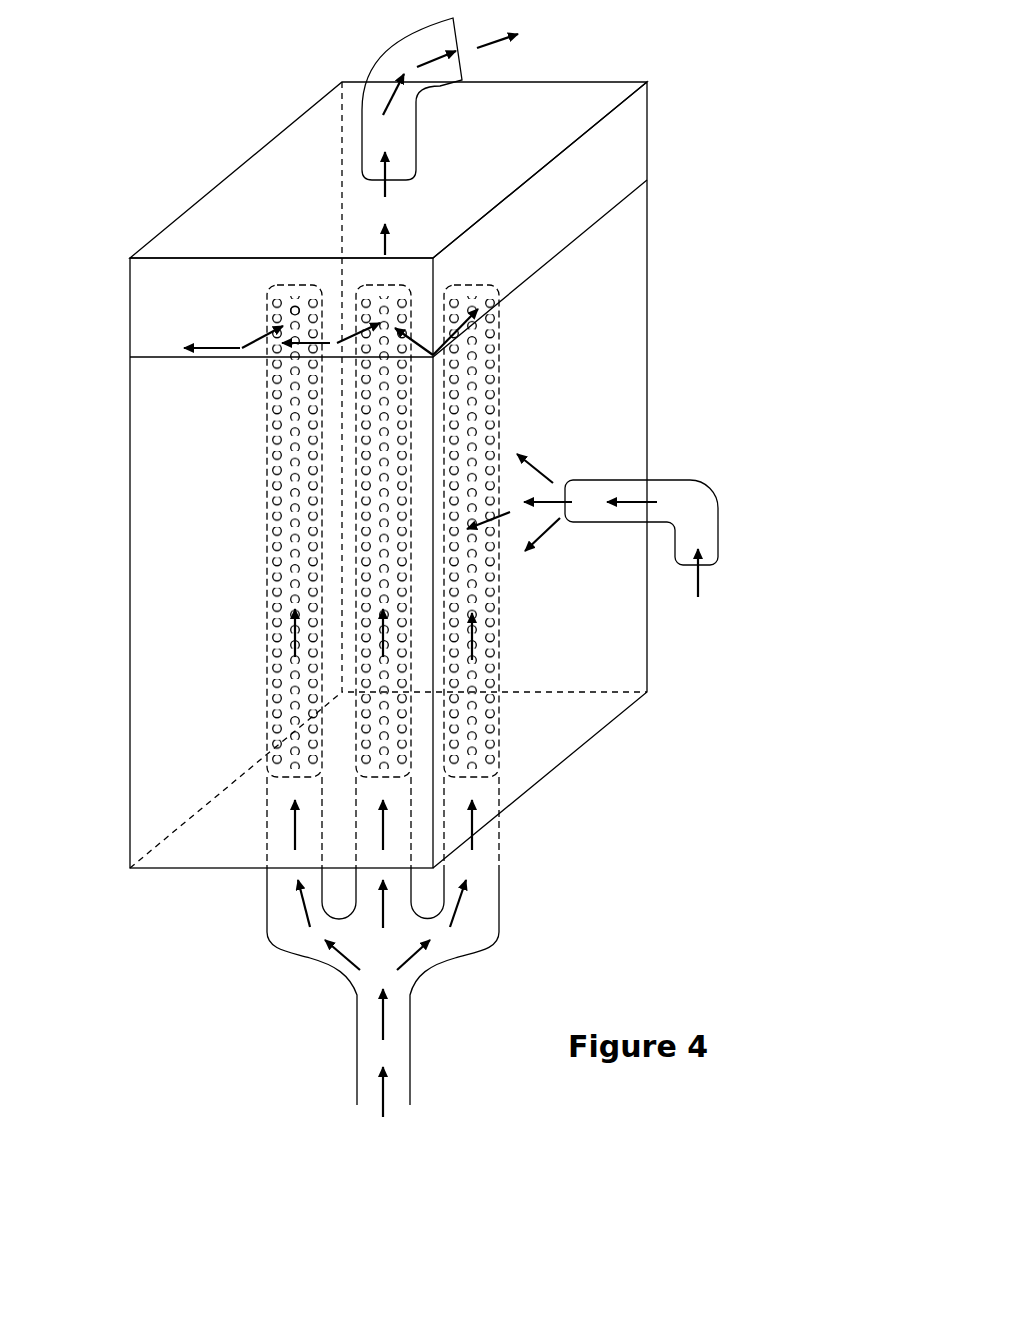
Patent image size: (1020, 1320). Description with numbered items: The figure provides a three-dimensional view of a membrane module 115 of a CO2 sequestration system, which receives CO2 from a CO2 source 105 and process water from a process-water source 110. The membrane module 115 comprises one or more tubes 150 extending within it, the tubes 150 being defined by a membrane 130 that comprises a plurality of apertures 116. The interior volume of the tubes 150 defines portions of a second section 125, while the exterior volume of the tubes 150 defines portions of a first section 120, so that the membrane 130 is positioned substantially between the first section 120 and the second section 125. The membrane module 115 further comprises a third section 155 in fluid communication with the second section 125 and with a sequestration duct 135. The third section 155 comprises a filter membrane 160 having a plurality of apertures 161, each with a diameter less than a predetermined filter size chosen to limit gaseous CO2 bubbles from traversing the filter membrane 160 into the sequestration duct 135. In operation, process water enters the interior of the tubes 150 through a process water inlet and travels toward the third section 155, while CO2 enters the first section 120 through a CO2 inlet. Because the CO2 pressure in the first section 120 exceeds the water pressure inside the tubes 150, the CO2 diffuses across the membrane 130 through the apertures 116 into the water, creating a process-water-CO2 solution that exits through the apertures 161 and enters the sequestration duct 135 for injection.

The CO2 source 105 is at (718, 555).
The process-water source 110 is at (370, 1102).
The membrane module 115 is at (222, 218).
The apertures 116 is at (487, 748).
The first section 120 is at (188, 503).
The second section 125 is at (297, 645).
The membrane 130 is at (280, 577).
The sequestration duct 135 is at (393, 62).
The tubes 150 is at (267, 448).
The third section 155 is at (157, 313).
The filter membrane 160 is at (263, 308).
The apertures 161 is at (297, 300).